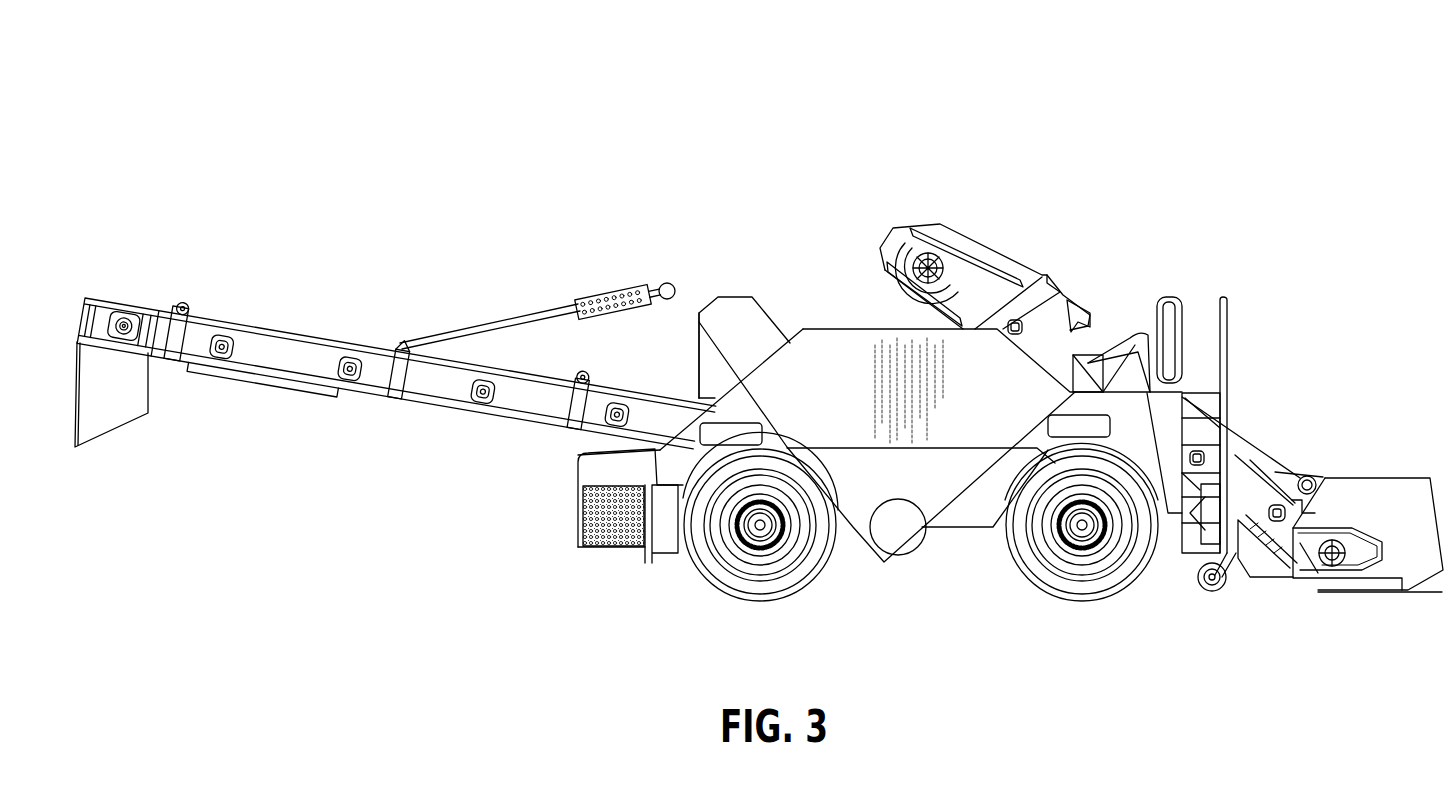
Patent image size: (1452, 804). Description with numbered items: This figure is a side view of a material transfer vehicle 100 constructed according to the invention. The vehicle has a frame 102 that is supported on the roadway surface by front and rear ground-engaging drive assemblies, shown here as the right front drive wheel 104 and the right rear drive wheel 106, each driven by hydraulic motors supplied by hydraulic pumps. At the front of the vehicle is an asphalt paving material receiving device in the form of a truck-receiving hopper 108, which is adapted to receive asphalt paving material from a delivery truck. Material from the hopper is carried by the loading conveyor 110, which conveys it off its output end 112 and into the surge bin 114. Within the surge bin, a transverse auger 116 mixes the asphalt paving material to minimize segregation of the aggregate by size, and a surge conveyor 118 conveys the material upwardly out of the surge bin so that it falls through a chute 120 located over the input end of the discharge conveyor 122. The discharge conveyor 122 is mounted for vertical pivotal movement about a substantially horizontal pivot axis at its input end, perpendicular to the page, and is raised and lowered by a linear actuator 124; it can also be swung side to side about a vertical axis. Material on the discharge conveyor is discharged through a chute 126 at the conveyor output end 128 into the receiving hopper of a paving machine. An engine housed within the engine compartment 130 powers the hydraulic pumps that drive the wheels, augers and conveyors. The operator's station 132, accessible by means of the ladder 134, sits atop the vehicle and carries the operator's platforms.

The material transfer vehicle 100 is at (723, 172).
The frame 102 is at (980, 510).
The right front drive wheel 104 is at (1066, 604).
The right rear drive wheel 106 is at (705, 594).
The truck-receiving hopper 108 is at (1403, 466).
The loading conveyor 110 is at (1252, 445).
The output end 112 is at (928, 213).
The surge bin 114 is at (857, 394).
The transverse auger 116 is at (893, 535).
The surge conveyor 118 is at (777, 308).
The chute 120 is at (694, 349).
The discharge conveyor 122 is at (366, 338).
The linear actuator 124 is at (617, 288).
The chute 126 is at (128, 428).
The conveyor output end 128 is at (124, 296).
The engine compartment 130 is at (571, 500).
The operator's station 132 is at (1128, 286).
The ladder 134 is at (1231, 354).